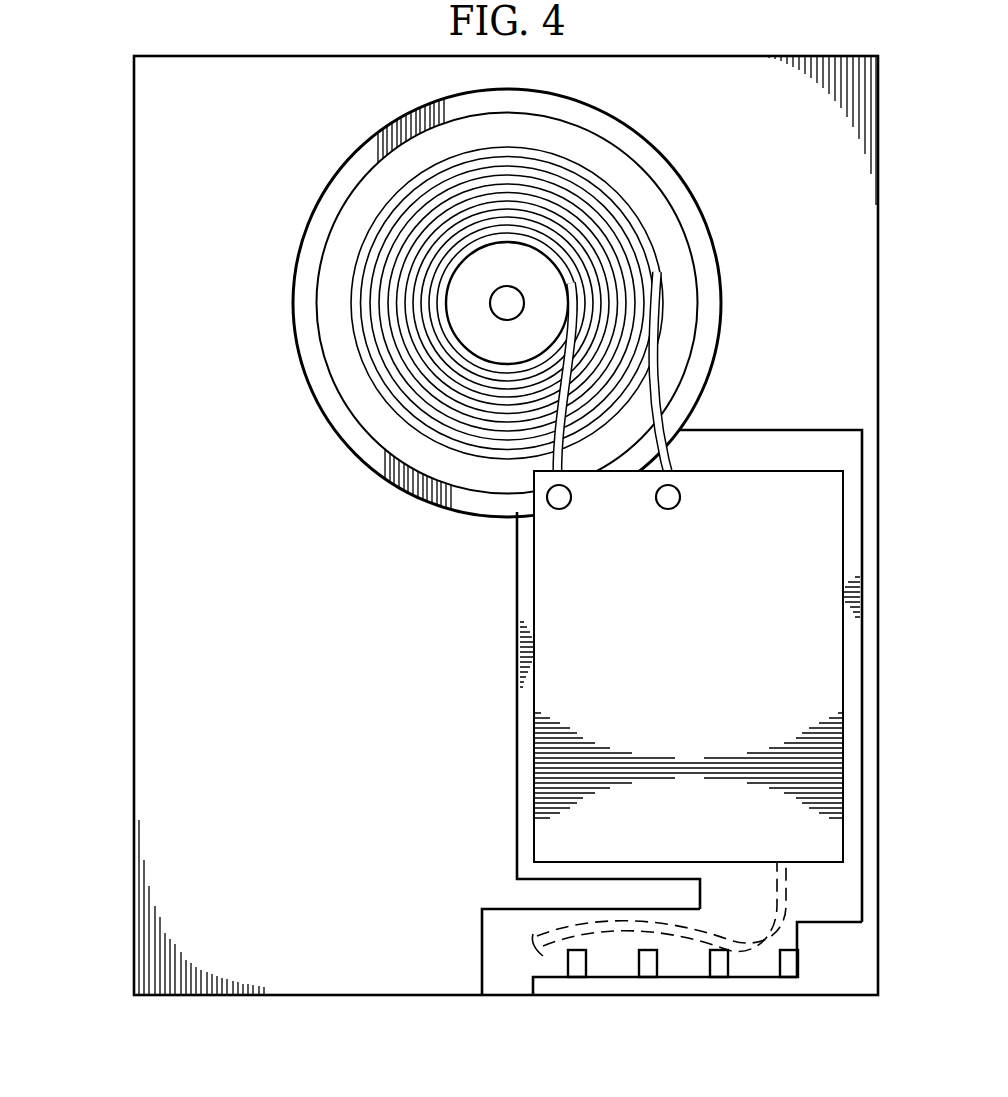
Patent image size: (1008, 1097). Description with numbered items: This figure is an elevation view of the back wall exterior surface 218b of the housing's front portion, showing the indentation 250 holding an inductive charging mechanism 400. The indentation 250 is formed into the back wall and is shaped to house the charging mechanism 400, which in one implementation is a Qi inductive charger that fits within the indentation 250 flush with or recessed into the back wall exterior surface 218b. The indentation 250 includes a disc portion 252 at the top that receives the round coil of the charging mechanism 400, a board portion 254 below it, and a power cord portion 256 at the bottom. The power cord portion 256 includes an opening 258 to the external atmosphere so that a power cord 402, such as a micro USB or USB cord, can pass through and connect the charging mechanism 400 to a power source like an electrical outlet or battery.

The back wall exterior surface 218b is at (140, 147).
The indentation 250 is at (748, 313).
The disc portion 252 is at (362, 448).
The charging mechanism 400 is at (630, 172).
The board portion 254 is at (523, 692).
The power cord portion 256 is at (490, 928).
The opening 258 is at (508, 996).
The power cord 402 is at (790, 888).